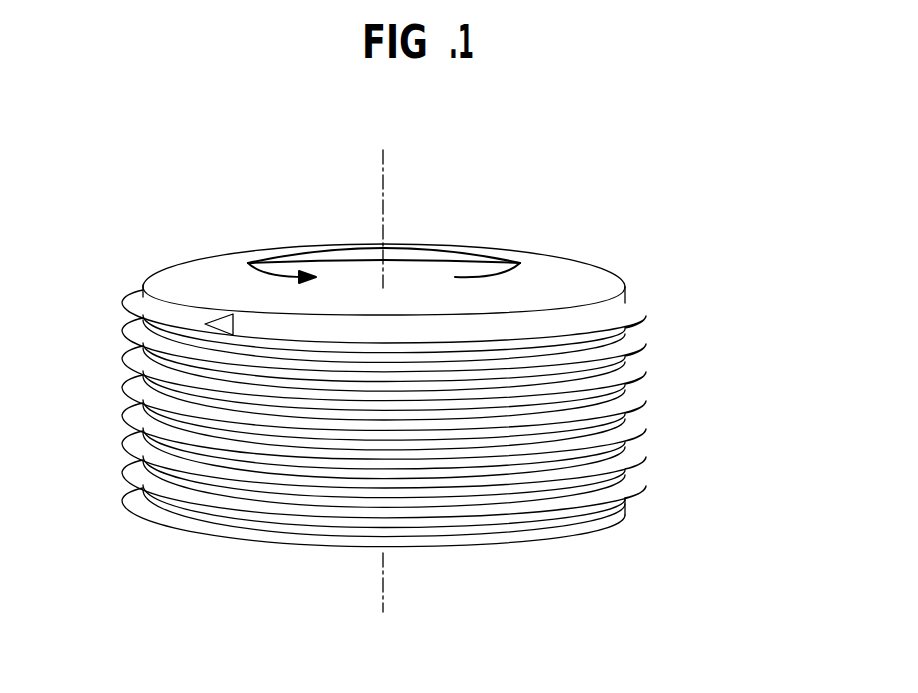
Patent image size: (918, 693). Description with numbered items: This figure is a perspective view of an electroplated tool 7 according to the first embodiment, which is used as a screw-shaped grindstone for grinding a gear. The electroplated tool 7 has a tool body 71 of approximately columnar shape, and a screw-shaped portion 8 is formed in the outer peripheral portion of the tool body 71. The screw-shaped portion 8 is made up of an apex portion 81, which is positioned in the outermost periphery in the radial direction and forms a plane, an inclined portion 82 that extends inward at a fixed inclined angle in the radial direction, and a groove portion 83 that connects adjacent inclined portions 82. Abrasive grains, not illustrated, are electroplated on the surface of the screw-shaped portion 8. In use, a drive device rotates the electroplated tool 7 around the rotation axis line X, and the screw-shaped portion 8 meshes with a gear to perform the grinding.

The electroplated tool 7 is at (608, 143).
The tool body 71 is at (589, 271).
The screw-shaped portion 8 is at (740, 262).
The apex portion 81 is at (642, 320).
The inclined portion 82 is at (632, 312).
The groove portion 83 is at (640, 347).
The rotation axis line X is at (385, 598).